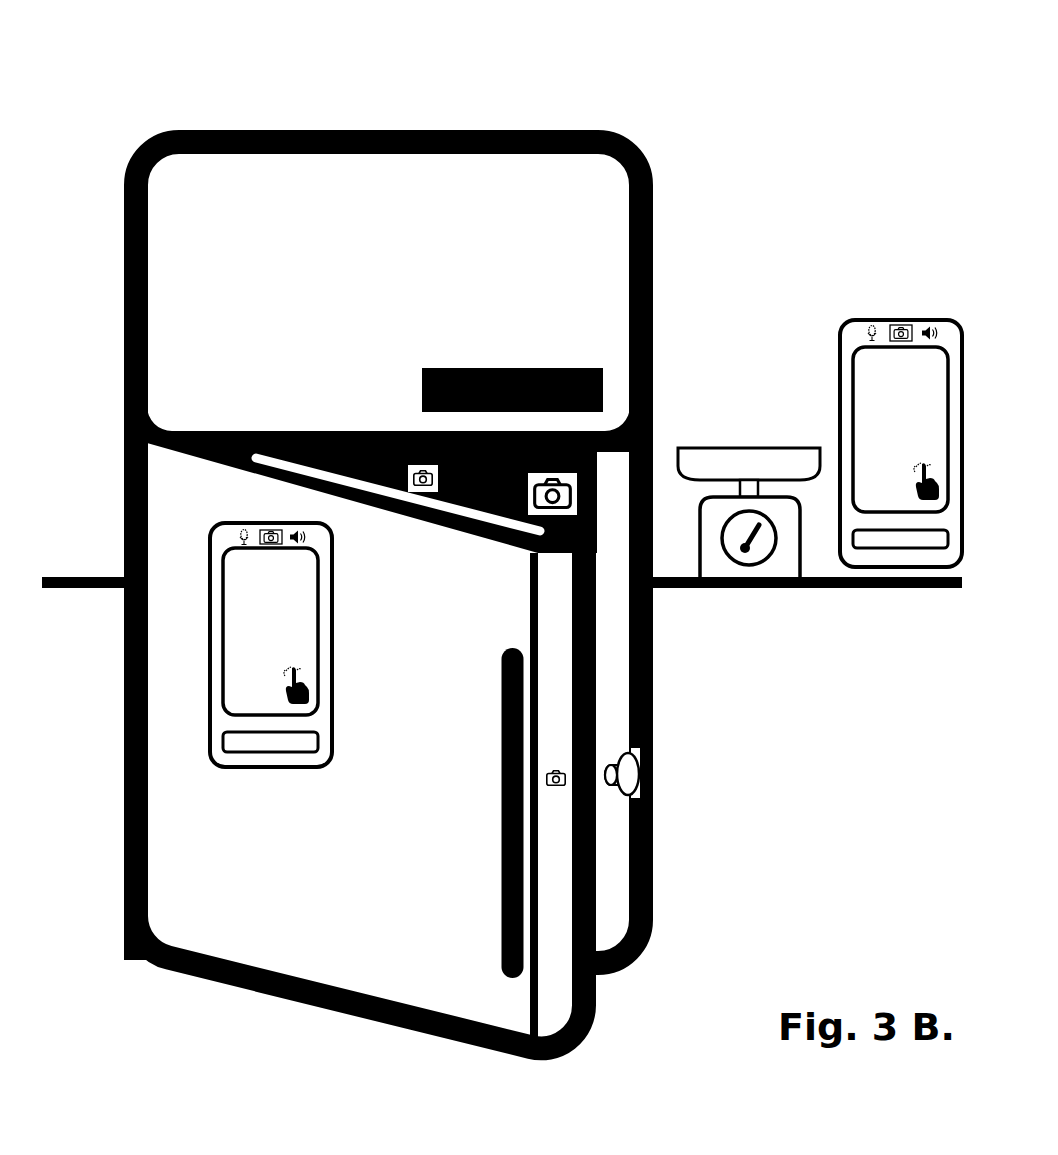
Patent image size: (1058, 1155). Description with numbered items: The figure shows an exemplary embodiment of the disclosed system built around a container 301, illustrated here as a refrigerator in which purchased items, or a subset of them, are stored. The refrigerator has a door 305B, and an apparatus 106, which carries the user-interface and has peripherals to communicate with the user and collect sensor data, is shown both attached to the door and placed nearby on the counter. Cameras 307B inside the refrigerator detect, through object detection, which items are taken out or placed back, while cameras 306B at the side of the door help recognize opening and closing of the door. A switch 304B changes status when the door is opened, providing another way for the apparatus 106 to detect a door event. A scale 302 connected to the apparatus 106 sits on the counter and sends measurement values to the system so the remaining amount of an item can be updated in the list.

The container 301 is at (225, 128).
The apparatus 106 is at (212, 540).
The scale 302 is at (805, 440).
The cameras inside the refrigerator 307B is at (532, 487).
The switch 304B is at (640, 773).
The door of the refrigerator 305B is at (562, 927).
The cameras at the side of the door 306B is at (547, 803).